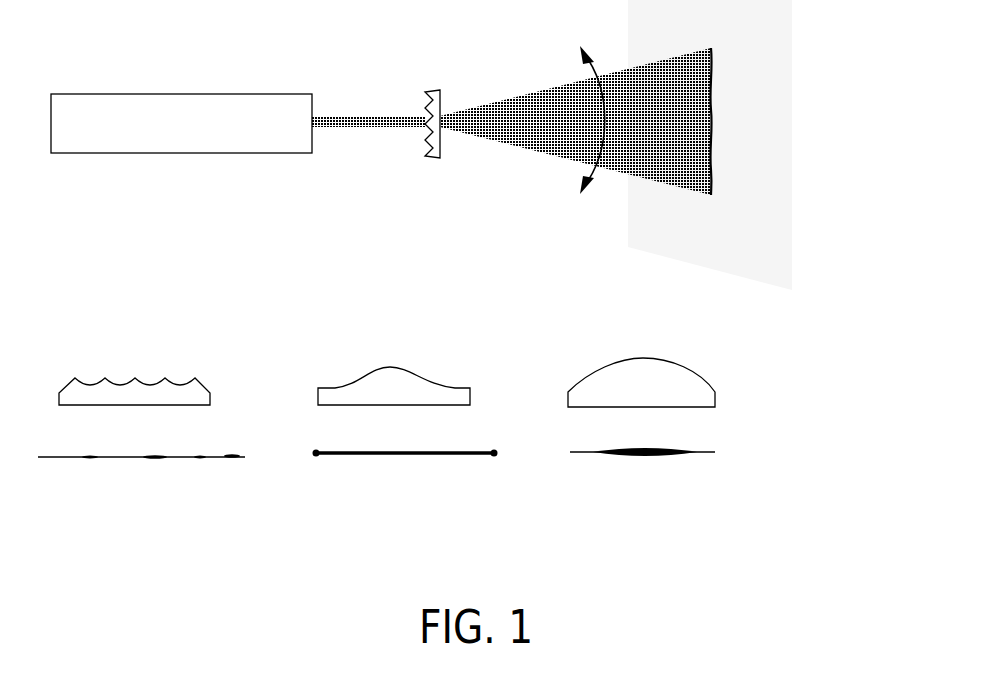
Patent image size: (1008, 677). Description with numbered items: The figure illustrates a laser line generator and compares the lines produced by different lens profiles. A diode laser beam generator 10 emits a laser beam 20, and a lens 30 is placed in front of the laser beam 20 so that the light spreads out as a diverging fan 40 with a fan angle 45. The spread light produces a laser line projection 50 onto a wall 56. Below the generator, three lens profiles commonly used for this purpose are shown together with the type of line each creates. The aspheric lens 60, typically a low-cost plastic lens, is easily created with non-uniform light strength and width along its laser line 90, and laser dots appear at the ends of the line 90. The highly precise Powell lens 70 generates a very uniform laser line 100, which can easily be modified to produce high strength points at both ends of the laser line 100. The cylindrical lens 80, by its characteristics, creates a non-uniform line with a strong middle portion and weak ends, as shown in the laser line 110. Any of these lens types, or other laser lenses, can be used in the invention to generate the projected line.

The diode laser beam generator 10 is at (175, 94).
The laser beam 20 is at (393, 123).
The lens 30 is at (440, 92).
The diverging beam 40 is at (547, 155).
The fan angle 45 is at (585, 72).
The laser line projection 50 is at (711, 108).
The wall 56 is at (787, 137).
The aspheric lens 60 is at (103, 380).
The Powell lens 70 is at (405, 368).
The cylindrical lens 80 is at (607, 367).
The laser line 90 is at (130, 457).
The laser line 100 is at (375, 455).
The laser line 110 is at (667, 457).